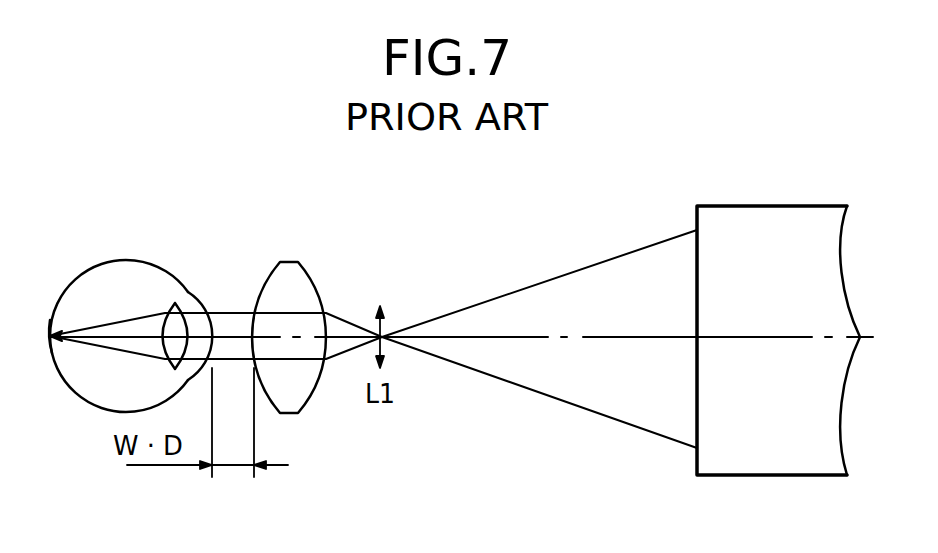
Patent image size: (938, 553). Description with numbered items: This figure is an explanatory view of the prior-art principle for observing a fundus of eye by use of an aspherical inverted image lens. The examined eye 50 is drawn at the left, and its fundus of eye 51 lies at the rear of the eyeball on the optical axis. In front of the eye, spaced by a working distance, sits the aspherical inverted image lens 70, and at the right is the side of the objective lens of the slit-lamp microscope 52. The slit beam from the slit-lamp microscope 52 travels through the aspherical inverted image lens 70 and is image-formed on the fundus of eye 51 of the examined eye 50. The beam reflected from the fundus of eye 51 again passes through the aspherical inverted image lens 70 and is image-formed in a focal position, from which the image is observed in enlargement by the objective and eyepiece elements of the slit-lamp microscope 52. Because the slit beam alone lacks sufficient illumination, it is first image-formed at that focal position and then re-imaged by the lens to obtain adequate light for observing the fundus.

The examined eye 50 is at (125, 260).
The fundus of eye 51 is at (48, 346).
The aspherical inverted image lens 70 is at (318, 380).
The objective lens side of slit-lamp microscope 52 is at (727, 477).